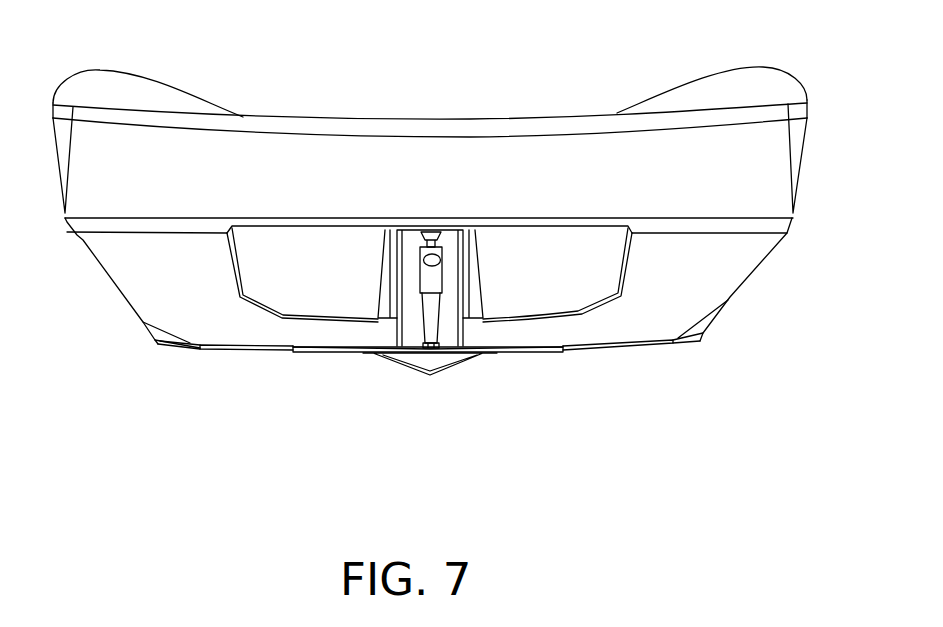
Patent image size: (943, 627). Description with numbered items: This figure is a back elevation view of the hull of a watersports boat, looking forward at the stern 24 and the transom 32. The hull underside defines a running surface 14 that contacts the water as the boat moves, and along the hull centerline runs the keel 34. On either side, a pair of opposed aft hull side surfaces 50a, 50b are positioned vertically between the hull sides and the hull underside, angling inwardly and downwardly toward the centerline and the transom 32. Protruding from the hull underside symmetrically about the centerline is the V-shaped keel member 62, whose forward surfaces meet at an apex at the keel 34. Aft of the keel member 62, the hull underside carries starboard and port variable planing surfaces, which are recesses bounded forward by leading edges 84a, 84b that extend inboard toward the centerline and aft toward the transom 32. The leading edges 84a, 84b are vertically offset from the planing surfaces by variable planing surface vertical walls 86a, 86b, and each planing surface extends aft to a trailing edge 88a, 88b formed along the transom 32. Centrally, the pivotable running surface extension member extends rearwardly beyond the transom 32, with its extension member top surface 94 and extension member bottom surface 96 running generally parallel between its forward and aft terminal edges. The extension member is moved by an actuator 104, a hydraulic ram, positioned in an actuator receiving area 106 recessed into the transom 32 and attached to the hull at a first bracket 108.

The running surface 14 is at (558, 446).
The stern 24 is at (822, 89).
The transom 32 is at (723, 262).
The keel 34 is at (432, 377).
The starboard aft hull side surface 50a is at (733, 300).
The port aft hull side surface 50b is at (102, 272).
The V-shaped keel member 62 is at (462, 388).
The starboard leading edge 84a is at (698, 341).
The port leading edge 84b is at (173, 345).
The starboard variable planing surface vertical wall 86a is at (687, 342).
The port variable planing surface vertical wall 86b is at (200, 350).
The starboard trailing edge 88a is at (645, 350).
The port trailing edge 88b is at (235, 351).
The extension member top surface 94 is at (358, 347).
The extension member bottom surface 96 is at (355, 353).
The actuator 104 is at (436, 273).
The actuator receiving area 106 is at (406, 262).
The first bracket 108 is at (432, 232).